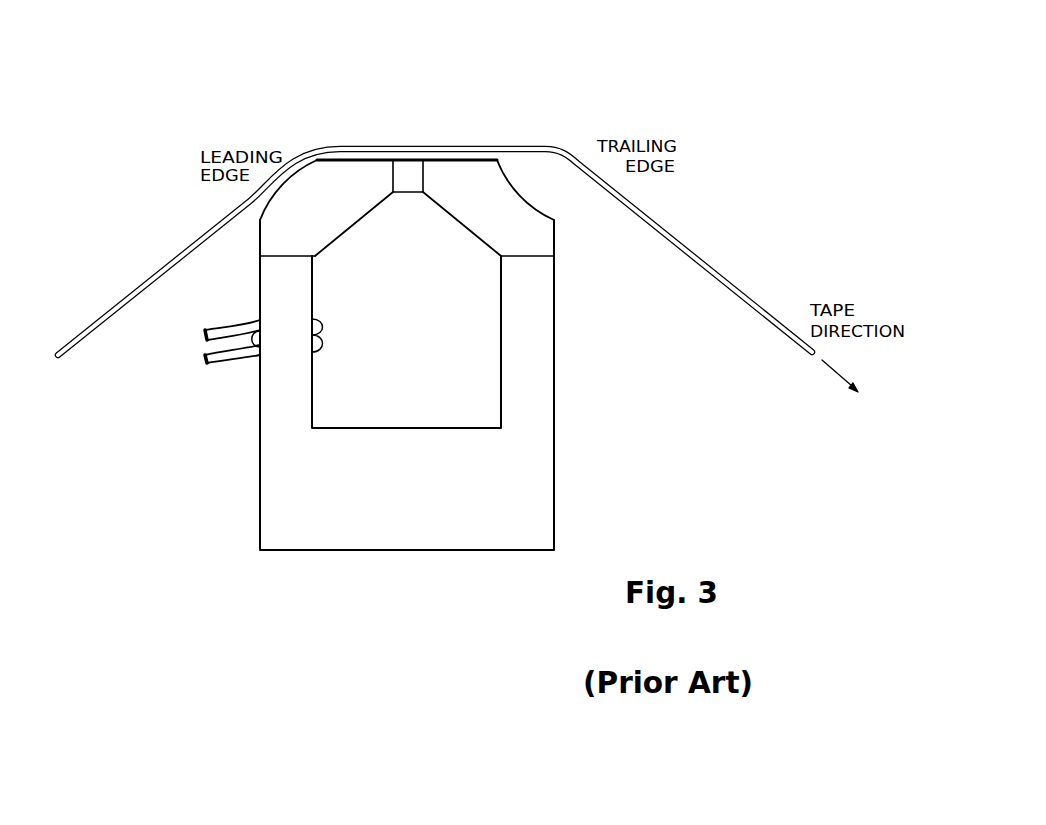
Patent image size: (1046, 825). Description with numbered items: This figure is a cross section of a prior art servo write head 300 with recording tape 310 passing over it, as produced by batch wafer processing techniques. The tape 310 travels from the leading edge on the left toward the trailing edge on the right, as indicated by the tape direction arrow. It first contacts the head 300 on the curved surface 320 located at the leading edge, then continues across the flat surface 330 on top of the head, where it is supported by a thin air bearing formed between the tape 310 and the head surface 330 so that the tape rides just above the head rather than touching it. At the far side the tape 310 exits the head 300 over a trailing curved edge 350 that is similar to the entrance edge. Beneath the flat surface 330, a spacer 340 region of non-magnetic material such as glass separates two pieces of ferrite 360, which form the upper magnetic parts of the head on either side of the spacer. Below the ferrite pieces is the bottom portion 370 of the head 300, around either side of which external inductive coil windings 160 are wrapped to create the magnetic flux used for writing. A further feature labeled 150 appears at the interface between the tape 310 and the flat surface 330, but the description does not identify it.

The servo write head 300 is at (710, 73).
The recording tape 310 is at (712, 261).
The curved surface 320 is at (274, 199).
The flat surface 330 is at (368, 157).
The spacer region 340 is at (408, 193).
The trailing curved edge 350 is at (526, 184).
The pieces of ferrite 360 is at (303, 248).
The bottom portion 370 is at (413, 486).
The tape-head interface region 150 is at (400, 160).
The inductive coil windings 160 is at (236, 320).